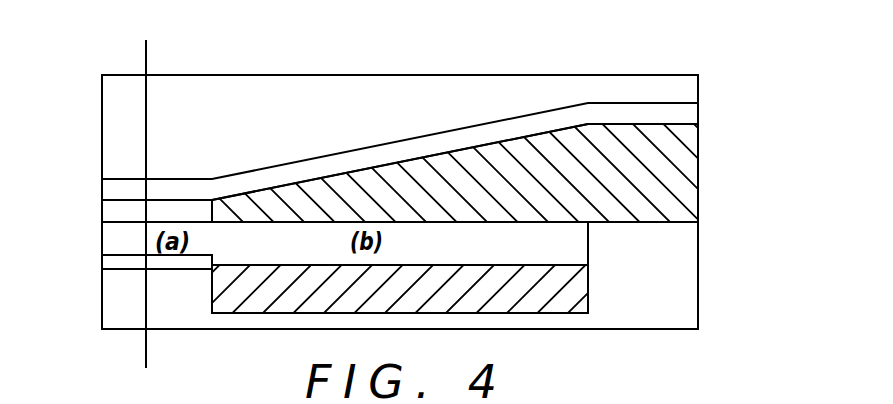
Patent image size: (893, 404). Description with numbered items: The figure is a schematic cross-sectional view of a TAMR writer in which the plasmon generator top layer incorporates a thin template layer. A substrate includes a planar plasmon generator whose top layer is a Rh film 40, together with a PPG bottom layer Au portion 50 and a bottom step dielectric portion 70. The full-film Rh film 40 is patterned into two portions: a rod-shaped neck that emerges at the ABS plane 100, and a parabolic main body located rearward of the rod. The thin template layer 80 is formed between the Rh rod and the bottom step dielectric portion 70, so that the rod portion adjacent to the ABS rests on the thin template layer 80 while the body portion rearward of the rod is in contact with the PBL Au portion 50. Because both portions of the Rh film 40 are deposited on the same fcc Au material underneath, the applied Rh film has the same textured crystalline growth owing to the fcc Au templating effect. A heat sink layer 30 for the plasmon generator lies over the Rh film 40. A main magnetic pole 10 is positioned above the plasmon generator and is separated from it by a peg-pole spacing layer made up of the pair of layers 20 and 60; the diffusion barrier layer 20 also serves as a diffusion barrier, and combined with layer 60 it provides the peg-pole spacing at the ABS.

The main magnetic pole 10 is at (112, 121).
The diffusion barrier layer 20 is at (687, 113).
The heat sink layer 30 is at (687, 163).
The Rh film 40 is at (572, 243).
The PBL Au portion 50 is at (572, 292).
The peg-pole spacing layer 60 is at (112, 213).
The bottom step dielectric portion 70 is at (112, 304).
The thin template layer 80 is at (112, 261).
The ABS plane 100 is at (145, 362).